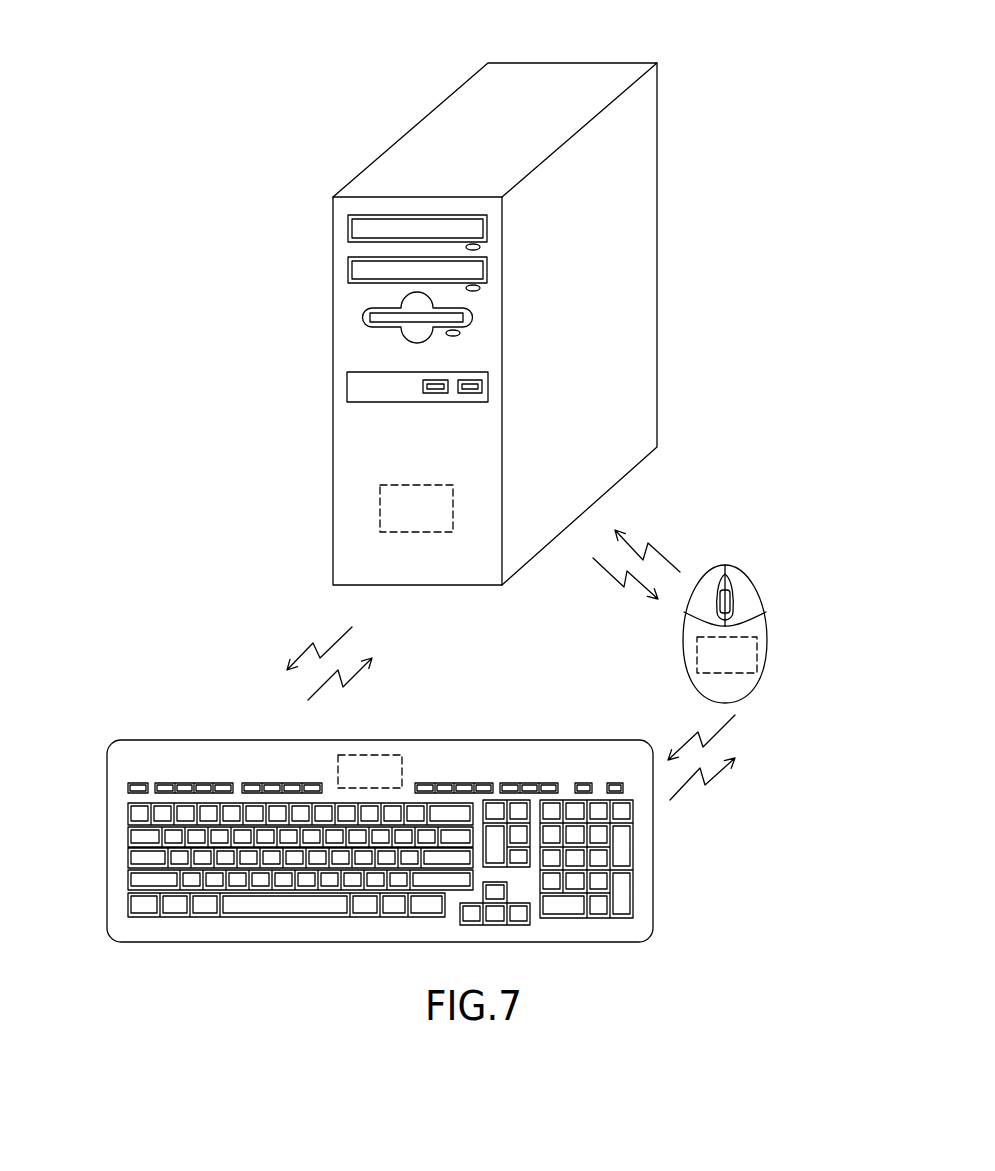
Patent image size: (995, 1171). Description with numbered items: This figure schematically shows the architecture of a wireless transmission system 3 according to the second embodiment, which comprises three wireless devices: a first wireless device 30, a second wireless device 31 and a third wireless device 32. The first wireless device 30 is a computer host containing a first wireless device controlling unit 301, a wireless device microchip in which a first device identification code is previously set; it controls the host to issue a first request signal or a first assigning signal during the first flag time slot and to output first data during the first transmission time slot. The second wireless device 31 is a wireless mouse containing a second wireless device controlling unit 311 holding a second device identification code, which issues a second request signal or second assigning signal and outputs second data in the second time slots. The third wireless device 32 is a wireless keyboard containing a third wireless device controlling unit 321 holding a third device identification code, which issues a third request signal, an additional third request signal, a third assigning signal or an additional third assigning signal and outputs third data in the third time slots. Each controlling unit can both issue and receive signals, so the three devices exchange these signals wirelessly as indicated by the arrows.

The wireless transmission system 3 is at (697, 20).
The first wireless device 30 is at (428, 135).
The first wireless device controlling unit 301 is at (420, 493).
The second wireless device 31 is at (748, 561).
The second wireless device controlling unit 311 is at (728, 647).
The third wireless device 32 is at (228, 753).
The third wireless device controlling unit 321 is at (372, 755).